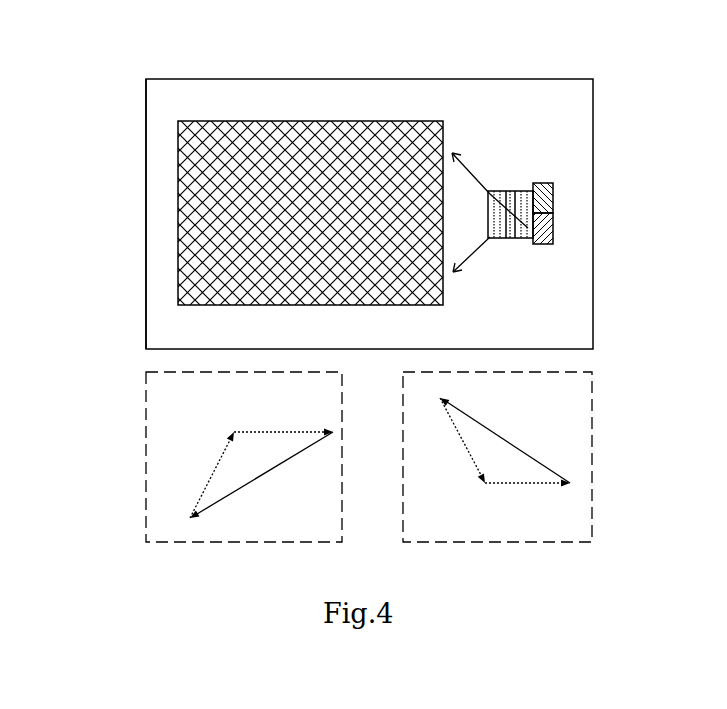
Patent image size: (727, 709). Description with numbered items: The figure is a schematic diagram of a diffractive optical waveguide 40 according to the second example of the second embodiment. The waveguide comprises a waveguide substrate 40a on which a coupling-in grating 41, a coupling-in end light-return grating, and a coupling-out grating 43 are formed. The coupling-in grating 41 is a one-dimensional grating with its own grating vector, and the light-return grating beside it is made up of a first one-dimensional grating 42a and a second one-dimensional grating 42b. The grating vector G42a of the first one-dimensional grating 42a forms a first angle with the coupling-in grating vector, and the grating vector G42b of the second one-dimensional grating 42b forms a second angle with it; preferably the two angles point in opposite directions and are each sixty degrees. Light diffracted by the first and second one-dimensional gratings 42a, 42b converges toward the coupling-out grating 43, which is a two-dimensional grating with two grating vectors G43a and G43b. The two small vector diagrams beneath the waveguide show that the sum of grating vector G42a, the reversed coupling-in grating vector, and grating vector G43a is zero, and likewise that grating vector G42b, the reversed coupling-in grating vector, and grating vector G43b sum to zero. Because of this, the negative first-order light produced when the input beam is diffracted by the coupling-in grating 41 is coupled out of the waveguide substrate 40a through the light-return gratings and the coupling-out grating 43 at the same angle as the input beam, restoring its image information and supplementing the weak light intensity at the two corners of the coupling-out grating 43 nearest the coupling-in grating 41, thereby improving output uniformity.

The diffractive optical waveguide 40 is at (342, 60).
The waveguide substrate 40a is at (146, 162).
The coupling-in grating 41 is at (507, 191).
The first one-dimensional grating 42a is at (553, 199).
The second one-dimensional grating 42b is at (553, 229).
The coupling-out grating 43 is at (178, 244).
The grating vector of the first one-dimensional grating G42a is at (261, 475).
The grating vector of the second one-dimensional grating G42b is at (507, 440).
The first grating vector of the coupling-out grating G43a is at (195, 475).
The second grating vector of the coupling-out grating G43b is at (449, 440).